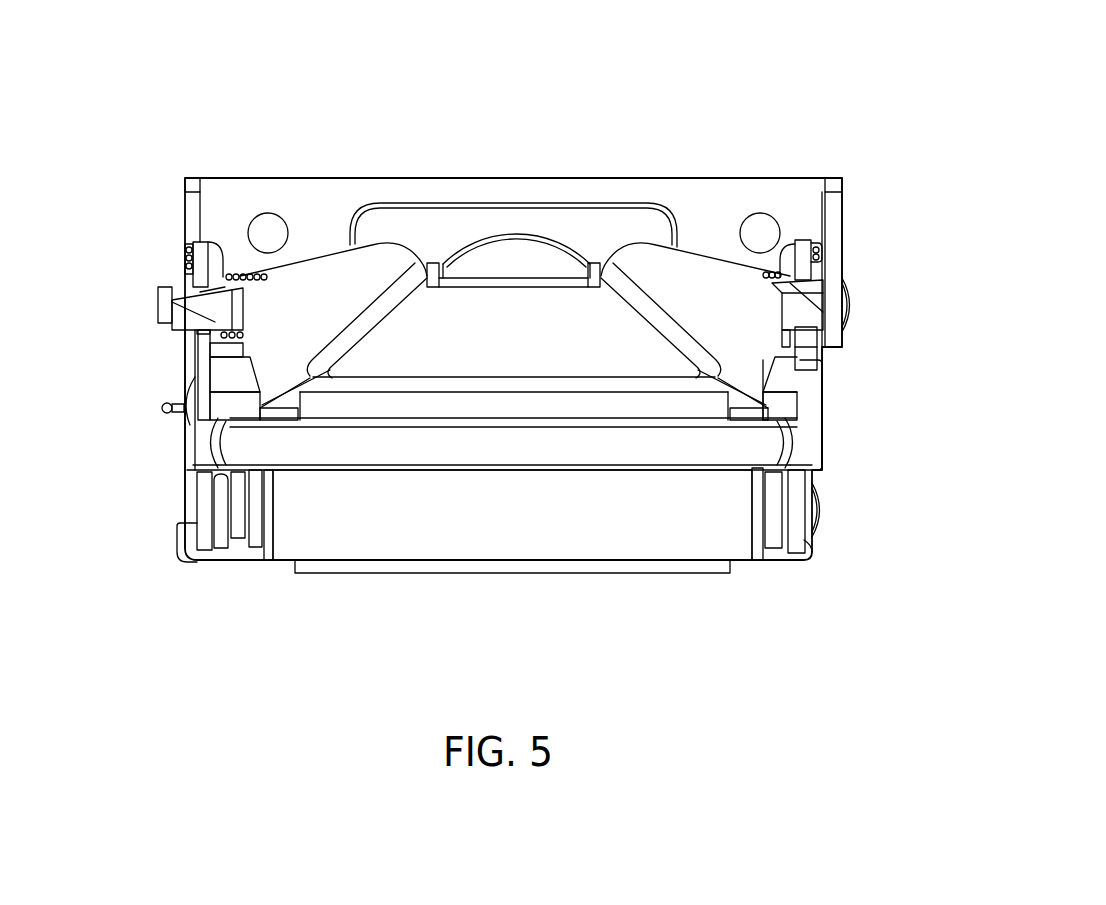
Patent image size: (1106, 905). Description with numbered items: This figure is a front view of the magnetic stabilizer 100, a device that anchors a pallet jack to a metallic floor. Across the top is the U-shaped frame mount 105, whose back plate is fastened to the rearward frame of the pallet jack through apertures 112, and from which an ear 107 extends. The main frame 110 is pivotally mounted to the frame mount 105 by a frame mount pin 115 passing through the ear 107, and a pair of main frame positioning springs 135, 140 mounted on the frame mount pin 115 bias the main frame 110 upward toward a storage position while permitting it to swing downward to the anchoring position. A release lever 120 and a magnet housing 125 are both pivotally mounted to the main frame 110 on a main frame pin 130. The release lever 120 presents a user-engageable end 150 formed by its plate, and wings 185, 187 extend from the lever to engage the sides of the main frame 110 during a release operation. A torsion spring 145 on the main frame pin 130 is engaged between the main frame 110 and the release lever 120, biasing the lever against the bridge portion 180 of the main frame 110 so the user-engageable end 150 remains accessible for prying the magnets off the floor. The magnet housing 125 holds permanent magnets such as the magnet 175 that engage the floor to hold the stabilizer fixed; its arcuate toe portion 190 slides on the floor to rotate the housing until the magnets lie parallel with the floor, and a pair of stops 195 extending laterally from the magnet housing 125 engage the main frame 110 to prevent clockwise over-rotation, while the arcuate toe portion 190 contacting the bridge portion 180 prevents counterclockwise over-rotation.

The magnetic stabilizer 100 is at (943, 185).
The frame mount 105 is at (790, 188).
The ear 107 is at (833, 220).
The main frame 110 is at (203, 360).
The apertures 112 is at (273, 232).
The frame mount pin 115 is at (853, 305).
The release lever 120 is at (287, 323).
The magnet housing 125 is at (430, 537).
The main frame pin 130 is at (818, 512).
The main frame positioning spring 135 is at (763, 273).
The main frame positioning spring 140 is at (240, 272).
The torsion spring 145 is at (217, 508).
The user-engageable end 150 is at (517, 262).
The permanent magnet 175 is at (605, 567).
The bridge portion 180 is at (257, 445).
The wing 185 is at (215, 302).
The wing 187 is at (850, 278).
The arcuate toe portion 190 is at (263, 540).
The stops 195 is at (187, 545).